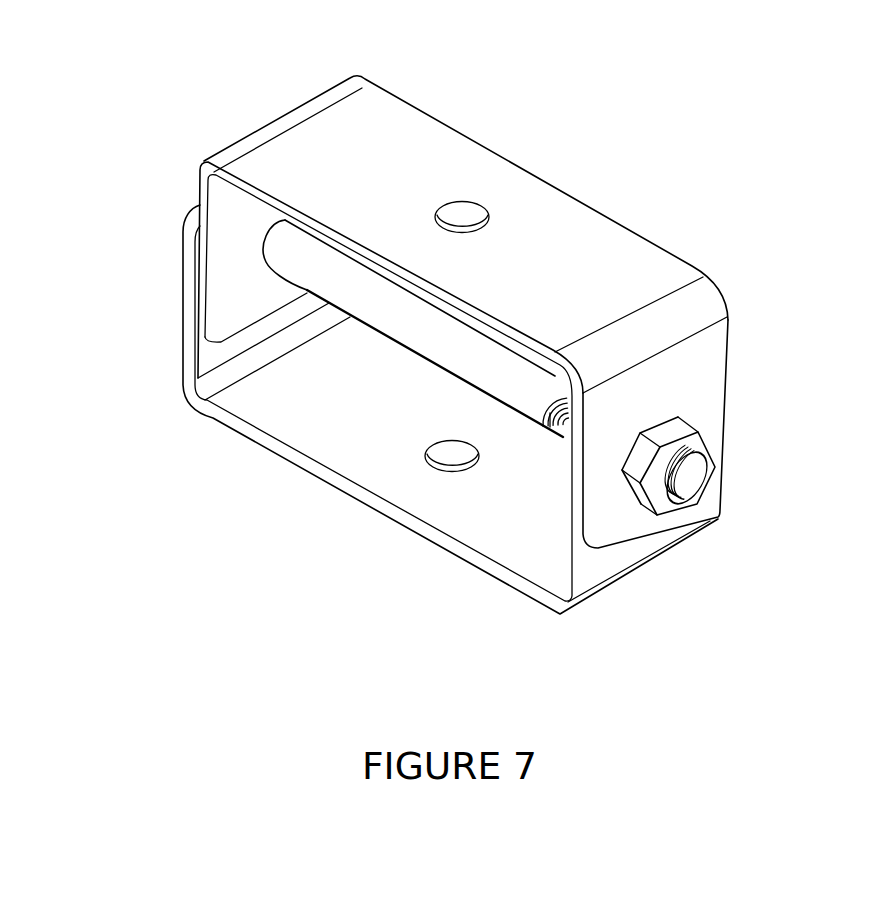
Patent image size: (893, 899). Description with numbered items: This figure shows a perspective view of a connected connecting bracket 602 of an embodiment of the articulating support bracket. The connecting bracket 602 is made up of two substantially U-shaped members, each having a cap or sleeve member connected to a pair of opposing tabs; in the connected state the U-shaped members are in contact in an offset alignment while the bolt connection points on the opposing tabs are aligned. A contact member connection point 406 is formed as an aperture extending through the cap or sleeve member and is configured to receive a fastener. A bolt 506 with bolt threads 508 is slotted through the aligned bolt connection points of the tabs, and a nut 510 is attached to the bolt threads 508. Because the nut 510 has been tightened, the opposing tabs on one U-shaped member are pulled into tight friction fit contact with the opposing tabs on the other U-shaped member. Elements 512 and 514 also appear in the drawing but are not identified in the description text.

The connected connecting bracket 602 is at (149, 15).
The contact member connection point 406 is at (452, 207).
The bolt 506 is at (443, 353).
The bolt threads 508 is at (553, 437).
The nut 510 is at (679, 417).
The bracket body 512 is at (303, 452).
The top plate 514 is at (651, 260).